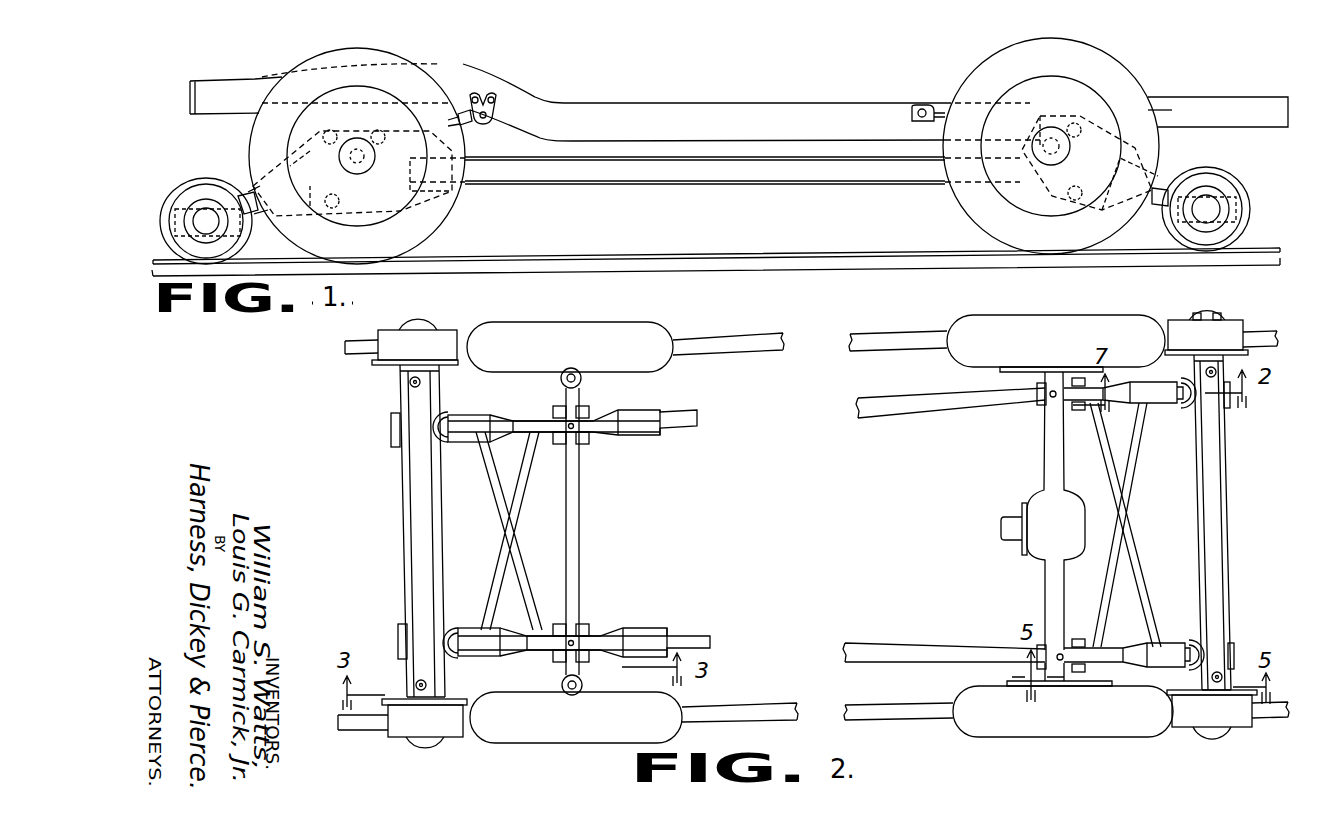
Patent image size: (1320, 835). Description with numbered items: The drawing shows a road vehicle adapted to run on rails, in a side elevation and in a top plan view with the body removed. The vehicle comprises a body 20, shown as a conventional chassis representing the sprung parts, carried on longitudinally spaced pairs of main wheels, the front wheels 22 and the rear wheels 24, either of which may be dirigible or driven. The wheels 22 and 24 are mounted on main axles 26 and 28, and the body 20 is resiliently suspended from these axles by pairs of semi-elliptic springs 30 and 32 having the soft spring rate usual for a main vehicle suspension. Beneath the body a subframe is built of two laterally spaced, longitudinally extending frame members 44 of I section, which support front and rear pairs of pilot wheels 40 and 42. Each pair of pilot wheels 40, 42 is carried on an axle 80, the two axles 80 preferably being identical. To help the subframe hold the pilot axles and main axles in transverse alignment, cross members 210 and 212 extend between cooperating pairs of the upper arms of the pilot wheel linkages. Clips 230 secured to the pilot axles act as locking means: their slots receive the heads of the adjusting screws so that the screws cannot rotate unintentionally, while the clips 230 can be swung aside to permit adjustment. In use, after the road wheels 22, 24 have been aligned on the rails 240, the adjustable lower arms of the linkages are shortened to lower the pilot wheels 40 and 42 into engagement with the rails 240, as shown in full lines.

In FIG. 1, the body 20 is at (684, 104).
In FIG. 1, the main wheels 22 is at (440, 212).
In FIG. 2, the main wheels 22 is at (670, 330).
In FIG. 1, the main wheels 24 is at (1104, 72).
In FIG. 2, the main wheels 24 is at (1052, 318).
In FIG. 2, the main axle 26 is at (579, 538).
In FIG. 2, the main axle 28 is at (1044, 458).
In FIG. 1, the semi-elliptic spring 30 is at (466, 96).
In FIG. 1, the semi-elliptic spring 32 is at (944, 105).
In FIG. 1, the pilot wheels 40 is at (190, 180).
In FIG. 2, the pilot wheels 40 is at (445, 333).
In FIG. 1, the pilot wheels 42 is at (1226, 178).
In FIG. 2, the pilot wheels 42 is at (1236, 326).
In FIG. 1, the frame members 44 is at (633, 177).
In FIG. 2, the frame members 44 is at (698, 416).
In FIG. 2, the axle 80 is at (404, 552).
In FIG. 2, the cross member 210 is at (1115, 594).
In FIG. 2, the cross member 212 is at (1133, 576).
In FIG. 2, the clip 230 is at (396, 448).
In FIG. 1, the rails 240 is at (852, 256).
In FIG. 2, the rails 240 is at (756, 705).